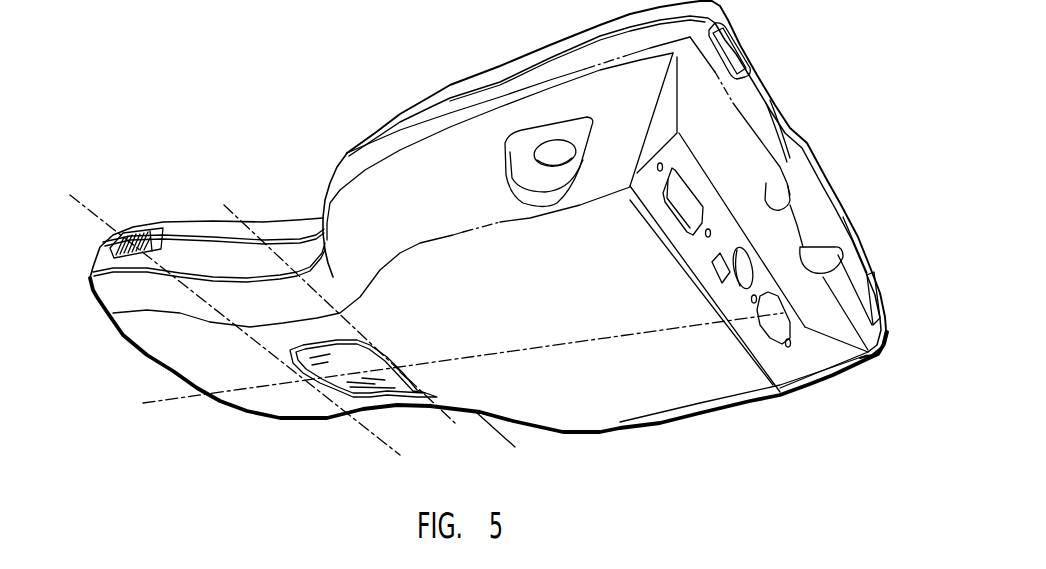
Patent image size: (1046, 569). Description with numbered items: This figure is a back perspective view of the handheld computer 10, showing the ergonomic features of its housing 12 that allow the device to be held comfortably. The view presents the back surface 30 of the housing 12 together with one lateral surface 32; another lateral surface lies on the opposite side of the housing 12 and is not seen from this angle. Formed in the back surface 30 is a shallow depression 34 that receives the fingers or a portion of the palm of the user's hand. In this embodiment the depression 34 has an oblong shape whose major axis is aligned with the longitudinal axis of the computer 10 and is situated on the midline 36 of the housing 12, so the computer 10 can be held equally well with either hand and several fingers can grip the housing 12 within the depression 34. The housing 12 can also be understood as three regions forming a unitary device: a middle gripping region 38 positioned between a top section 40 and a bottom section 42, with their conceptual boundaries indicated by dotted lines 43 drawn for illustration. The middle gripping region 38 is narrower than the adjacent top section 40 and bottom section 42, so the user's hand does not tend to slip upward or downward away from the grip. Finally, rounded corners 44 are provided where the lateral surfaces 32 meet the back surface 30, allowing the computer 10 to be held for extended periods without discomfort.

The computer 10 is at (823, 43).
The housing 12 is at (183, 360).
The back surface 30 is at (503, 248).
The lateral surface 32 is at (447, 113).
The shallow depression 34 is at (323, 380).
The midline 36 is at (640, 337).
The middle gripping region 38 is at (298, 185).
The top section 40 is at (723, 247).
The bottom section 42 is at (247, 373).
The dotted lines 43 is at (115, 240).
The rounded corners 44 is at (320, 348).